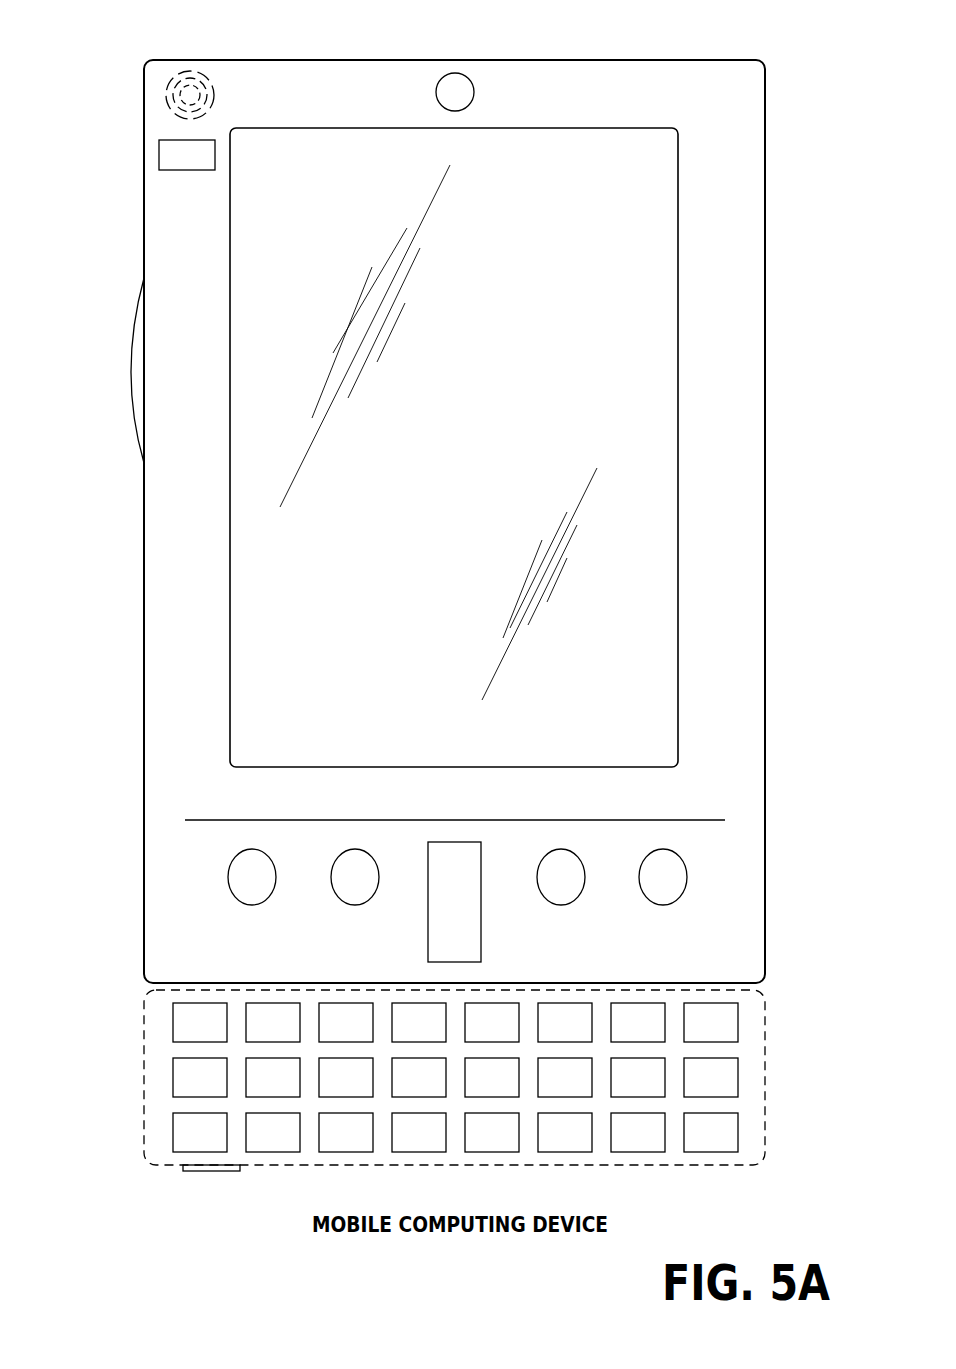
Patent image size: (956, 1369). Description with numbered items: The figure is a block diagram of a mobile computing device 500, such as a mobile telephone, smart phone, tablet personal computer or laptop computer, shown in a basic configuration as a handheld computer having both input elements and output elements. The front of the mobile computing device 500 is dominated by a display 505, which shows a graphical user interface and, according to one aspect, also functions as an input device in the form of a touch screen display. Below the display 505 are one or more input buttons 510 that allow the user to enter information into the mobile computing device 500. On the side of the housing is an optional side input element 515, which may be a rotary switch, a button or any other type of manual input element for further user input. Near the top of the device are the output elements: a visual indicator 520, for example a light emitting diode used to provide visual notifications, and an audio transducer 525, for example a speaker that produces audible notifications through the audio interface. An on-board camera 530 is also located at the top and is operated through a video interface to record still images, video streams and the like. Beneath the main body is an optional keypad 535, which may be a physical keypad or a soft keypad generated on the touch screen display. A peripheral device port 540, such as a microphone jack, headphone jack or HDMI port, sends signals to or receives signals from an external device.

The mobile computing device 500 is at (732, 60).
The display 505 is at (252, 612).
The input buttons 510 is at (248, 905).
The side input element 515 is at (123, 373).
The visual indicator 520 is at (159, 153).
The audio transducer 525 is at (167, 97).
The on-board camera 530 is at (455, 73).
The keypad 535 is at (153, 1077).
The peripheral device port 540 is at (188, 1173).